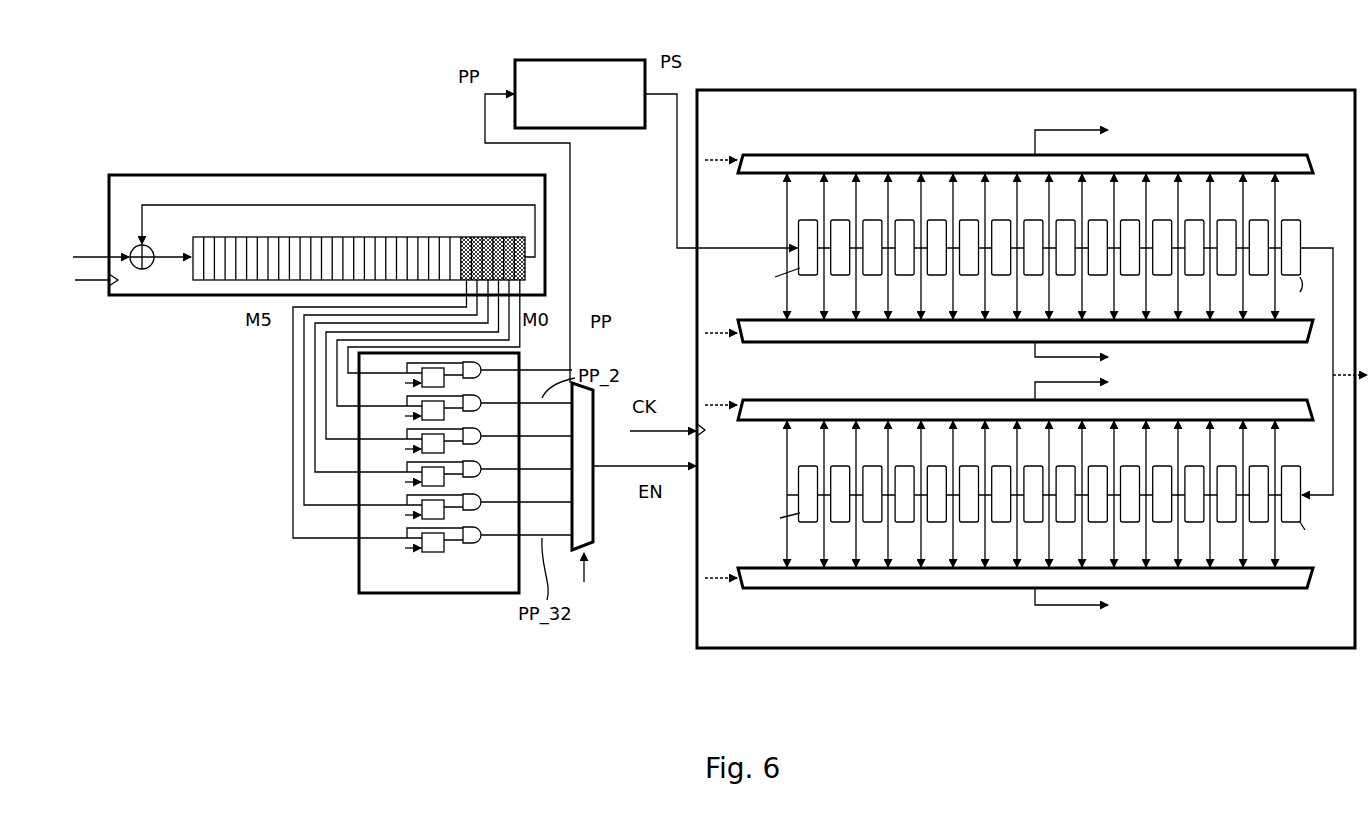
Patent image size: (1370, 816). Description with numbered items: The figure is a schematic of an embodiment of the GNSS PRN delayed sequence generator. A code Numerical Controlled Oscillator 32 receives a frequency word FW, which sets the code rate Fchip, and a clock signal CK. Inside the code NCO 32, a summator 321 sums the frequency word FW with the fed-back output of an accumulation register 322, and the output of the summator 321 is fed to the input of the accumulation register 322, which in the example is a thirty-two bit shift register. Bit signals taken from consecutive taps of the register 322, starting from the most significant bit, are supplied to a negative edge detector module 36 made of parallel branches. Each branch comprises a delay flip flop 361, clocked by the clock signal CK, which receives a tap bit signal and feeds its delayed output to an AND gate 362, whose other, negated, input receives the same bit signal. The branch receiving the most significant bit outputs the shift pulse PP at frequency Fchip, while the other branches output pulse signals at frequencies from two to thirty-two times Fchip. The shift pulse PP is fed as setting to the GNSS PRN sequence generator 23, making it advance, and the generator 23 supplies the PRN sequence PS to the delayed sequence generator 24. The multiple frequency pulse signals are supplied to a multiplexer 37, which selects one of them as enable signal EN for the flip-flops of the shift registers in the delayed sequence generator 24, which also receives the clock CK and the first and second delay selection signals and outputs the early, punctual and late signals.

The GNSS PRN sequence generator 23 is at (582, 62).
The delayed sequence generator 24 is at (1005, 98).
The code Numerical Controlled Oscillator 32 is at (327, 174).
The summator 321 is at (153, 252).
The accumulation register 322 is at (422, 238).
The negative edge detector module 36 is at (357, 584).
The delay flip flop 361 is at (440, 543).
The AND gate 362 is at (478, 541).
The multiplexer 37 is at (597, 543).